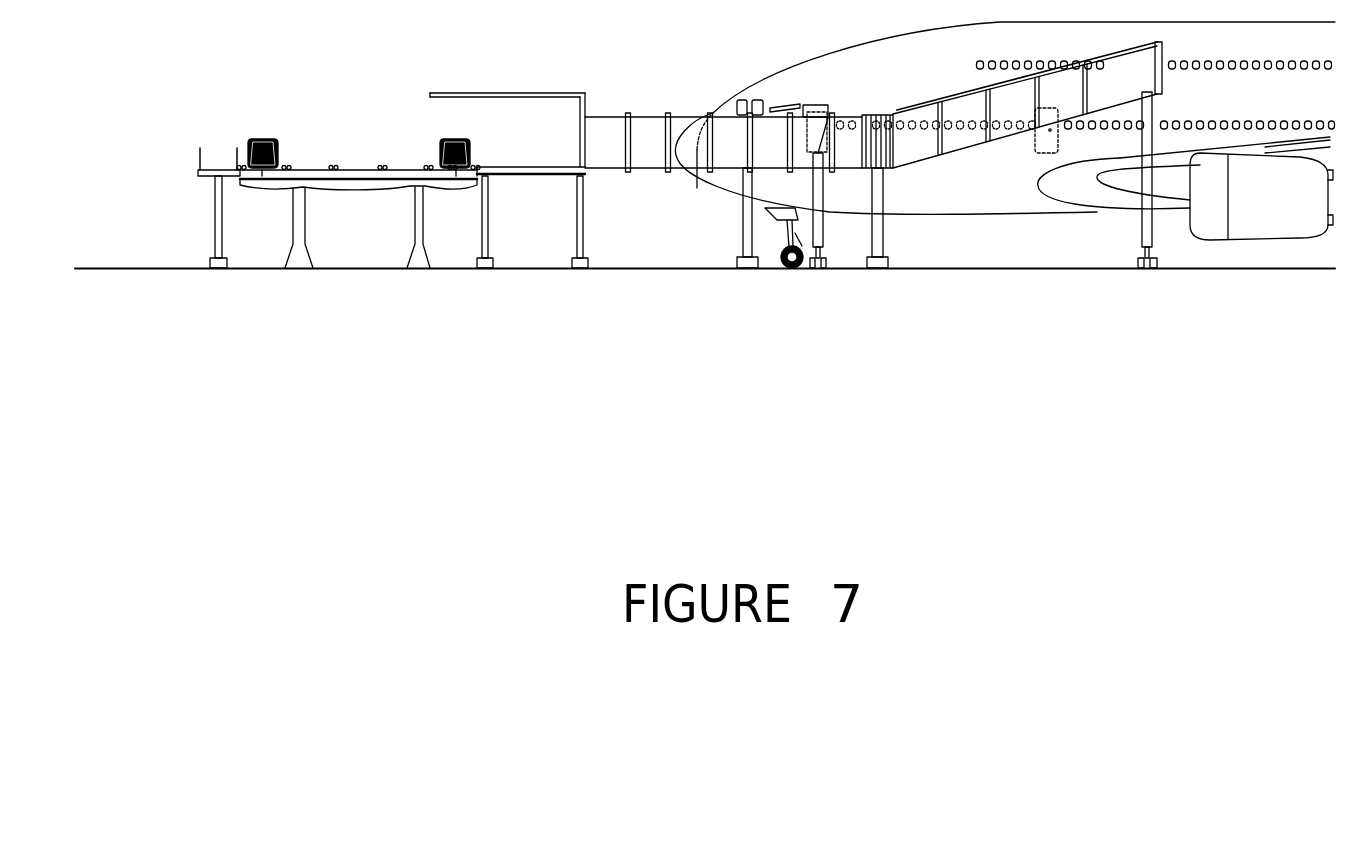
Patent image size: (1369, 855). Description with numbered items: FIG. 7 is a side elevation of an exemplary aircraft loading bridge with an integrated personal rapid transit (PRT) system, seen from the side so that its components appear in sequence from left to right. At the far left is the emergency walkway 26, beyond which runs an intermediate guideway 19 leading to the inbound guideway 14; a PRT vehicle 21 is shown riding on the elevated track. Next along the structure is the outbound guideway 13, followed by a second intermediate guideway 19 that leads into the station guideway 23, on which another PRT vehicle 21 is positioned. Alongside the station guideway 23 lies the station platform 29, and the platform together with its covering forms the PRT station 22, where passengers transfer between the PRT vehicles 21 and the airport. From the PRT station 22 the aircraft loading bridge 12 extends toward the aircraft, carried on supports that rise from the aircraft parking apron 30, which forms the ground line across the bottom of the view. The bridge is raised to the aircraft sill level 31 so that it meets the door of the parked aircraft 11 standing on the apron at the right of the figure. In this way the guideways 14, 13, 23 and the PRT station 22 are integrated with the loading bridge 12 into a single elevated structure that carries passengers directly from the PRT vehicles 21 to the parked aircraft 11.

The parked aircraft 11 is at (962, 207).
The aircraft loading bridge 12 is at (655, 160).
The outbound guideway 13 is at (357, 188).
The inbound guideway 14 is at (310, 170).
The intermediate guideway 19 is at (262, 175).
The PRT vehicle 21 is at (270, 138).
The PRT station 22 is at (576, 128).
The station guideway 23 is at (456, 172).
The emergency walkway 26 is at (204, 180).
The station platform 29 is at (548, 176).
The aircraft parking apron 30 is at (638, 267).
The aircraft sill level 31 is at (831, 112).